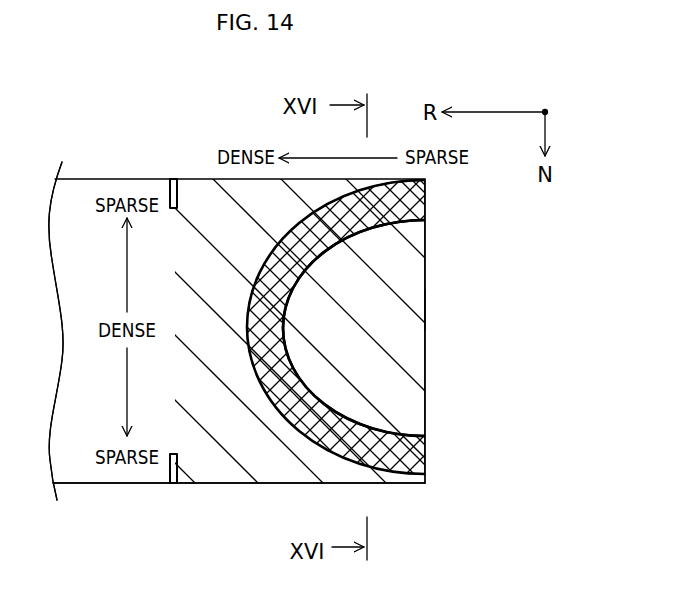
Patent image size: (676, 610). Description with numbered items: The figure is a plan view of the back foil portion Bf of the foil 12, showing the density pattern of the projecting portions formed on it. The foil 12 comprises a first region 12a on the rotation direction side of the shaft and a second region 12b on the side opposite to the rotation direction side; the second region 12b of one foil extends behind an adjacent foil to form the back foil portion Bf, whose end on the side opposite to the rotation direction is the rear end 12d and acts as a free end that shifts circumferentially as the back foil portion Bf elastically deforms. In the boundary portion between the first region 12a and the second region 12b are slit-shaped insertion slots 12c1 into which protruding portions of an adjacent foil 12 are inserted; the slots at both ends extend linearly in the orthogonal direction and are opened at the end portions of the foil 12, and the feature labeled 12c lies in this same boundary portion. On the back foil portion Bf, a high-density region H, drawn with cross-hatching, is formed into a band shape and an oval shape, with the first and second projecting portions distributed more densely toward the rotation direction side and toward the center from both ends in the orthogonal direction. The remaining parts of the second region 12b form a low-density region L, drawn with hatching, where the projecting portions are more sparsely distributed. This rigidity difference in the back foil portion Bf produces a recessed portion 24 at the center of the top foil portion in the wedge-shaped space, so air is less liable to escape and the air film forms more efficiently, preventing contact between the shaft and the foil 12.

The foil 12 is at (88, 178).
The first region 12a is at (83, 460).
The second region 12b is at (293, 467).
The protrusion 12c is at (170, 467).
The insertion slot 12c1 is at (170, 190).
The rear end 12d is at (426, 250).
The recessed portion 24 is at (388, 361).
The high-density region H is at (364, 421).
The low-density region L is at (322, 373).
The back foil portion Bf is at (427, 311).